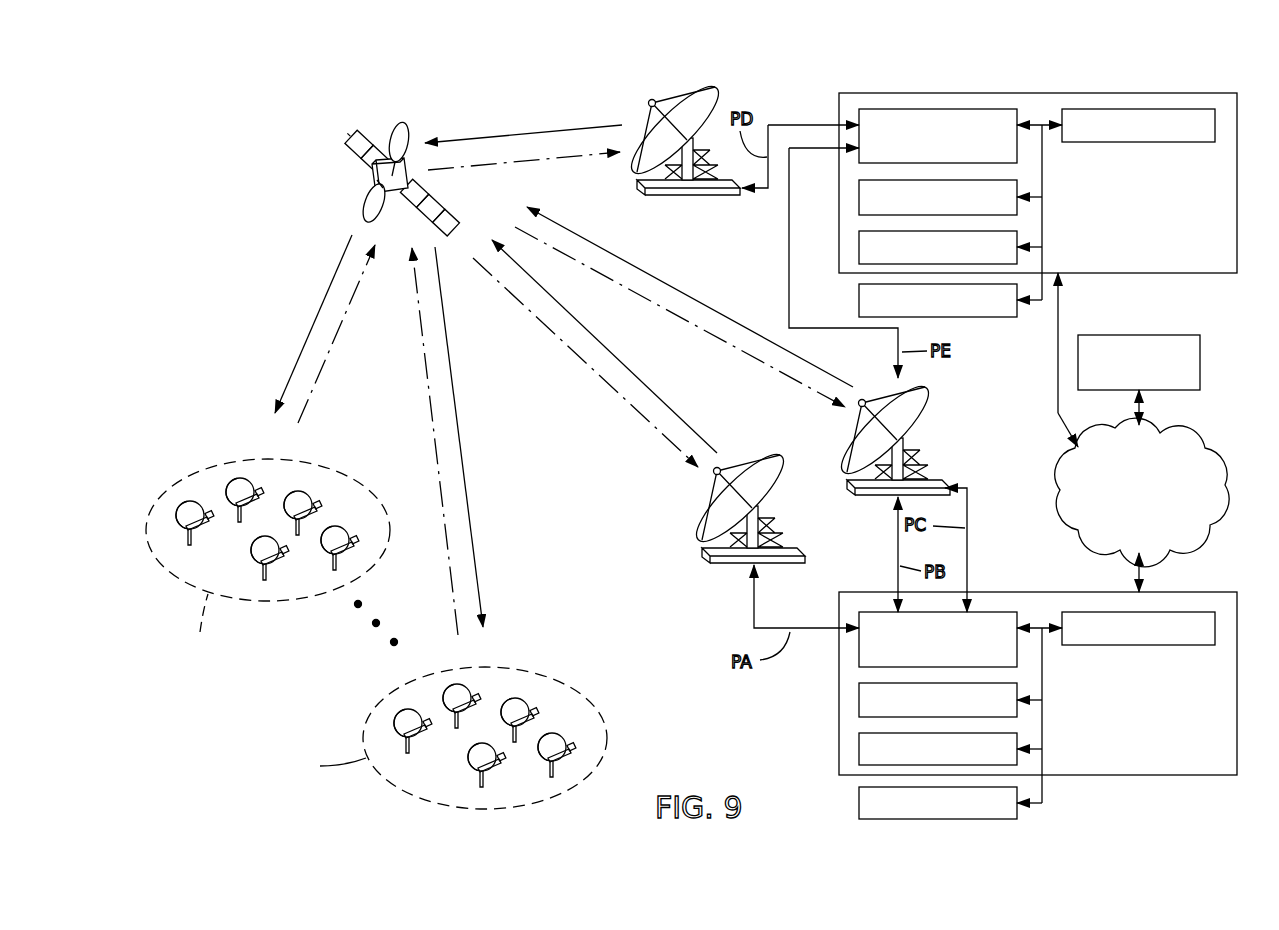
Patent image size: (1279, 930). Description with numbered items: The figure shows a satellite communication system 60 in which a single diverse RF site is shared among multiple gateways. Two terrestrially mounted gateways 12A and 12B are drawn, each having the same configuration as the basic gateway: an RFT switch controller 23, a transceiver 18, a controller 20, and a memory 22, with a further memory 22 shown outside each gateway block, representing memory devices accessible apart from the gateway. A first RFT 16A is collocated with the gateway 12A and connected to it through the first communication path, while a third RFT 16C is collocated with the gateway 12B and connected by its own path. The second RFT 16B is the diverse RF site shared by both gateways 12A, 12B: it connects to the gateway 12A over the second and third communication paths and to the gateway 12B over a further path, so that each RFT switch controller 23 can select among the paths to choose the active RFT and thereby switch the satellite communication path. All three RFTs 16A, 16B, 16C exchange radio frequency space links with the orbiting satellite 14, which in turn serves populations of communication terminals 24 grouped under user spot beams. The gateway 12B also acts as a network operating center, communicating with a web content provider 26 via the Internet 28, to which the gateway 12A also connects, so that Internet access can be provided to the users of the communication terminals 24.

The satellite 14 is at (332, 137).
The satellite communication system 60 is at (773, 97).
The gateway 12B is at (1185, 291).
The gateway 12A is at (1185, 573).
The RFT switch controller 23 is at (863, 164).
The transceiver 18 is at (859, 200).
The memory 22 is at (859, 245).
The controller 20 is at (1160, 142).
The web content provider 26 is at (1200, 355).
The Internet 28 is at (1186, 434).
The first radio frequency terminal 16A is at (800, 548).
The second radio frequency terminal 16B is at (940, 480).
The third radio frequency terminal 16C is at (700, 197).
The communication terminal 24 is at (240, 478).